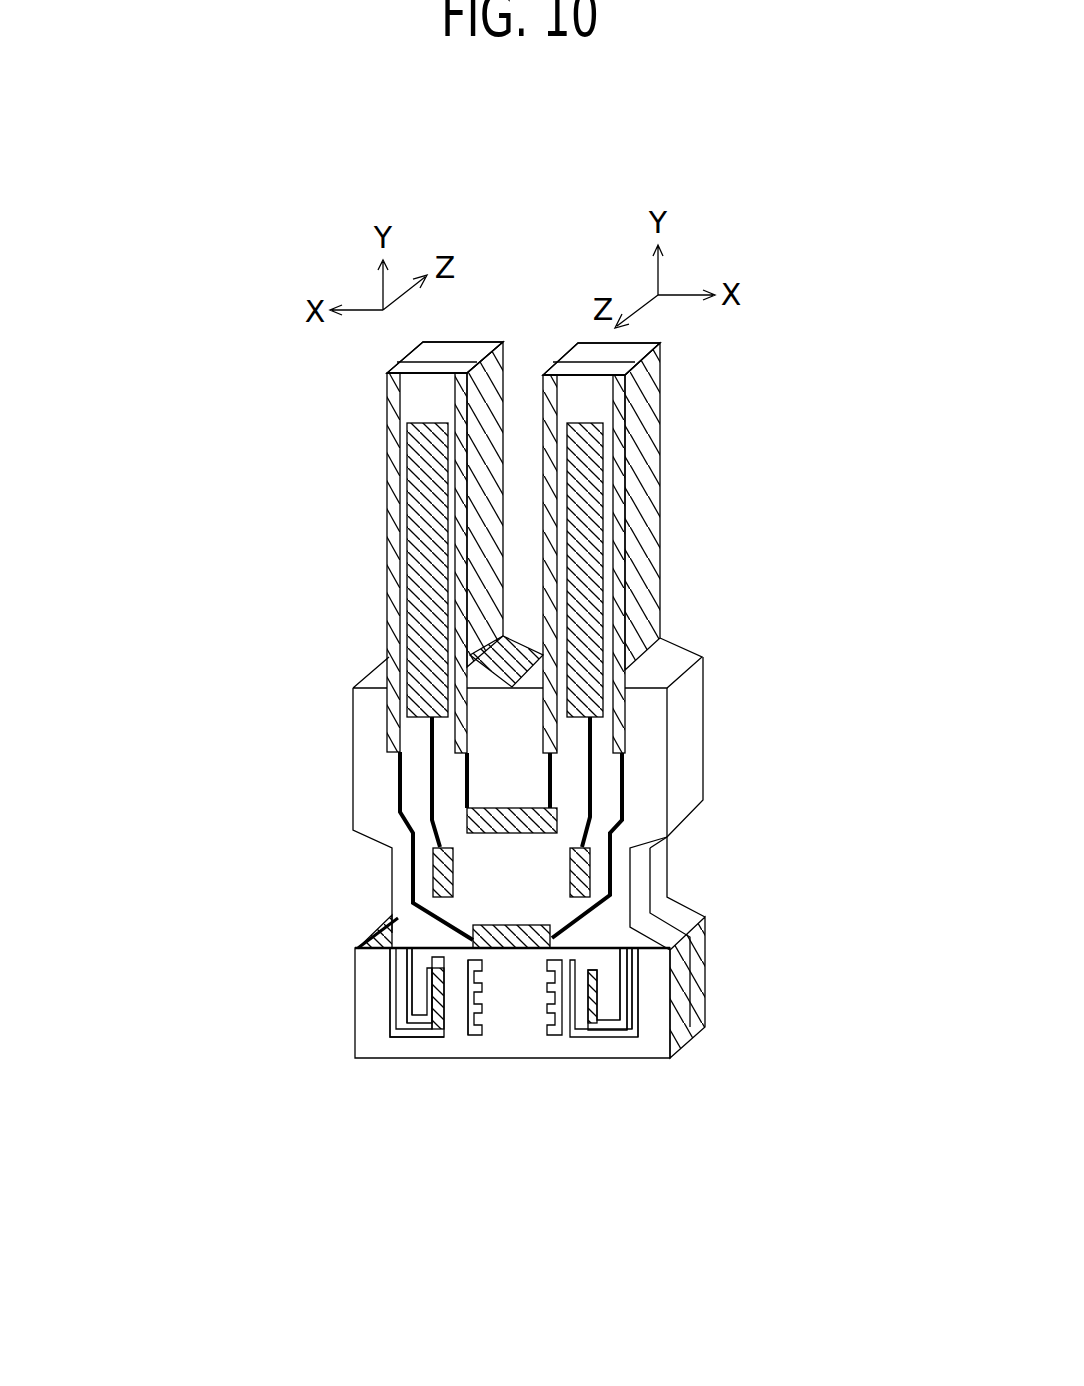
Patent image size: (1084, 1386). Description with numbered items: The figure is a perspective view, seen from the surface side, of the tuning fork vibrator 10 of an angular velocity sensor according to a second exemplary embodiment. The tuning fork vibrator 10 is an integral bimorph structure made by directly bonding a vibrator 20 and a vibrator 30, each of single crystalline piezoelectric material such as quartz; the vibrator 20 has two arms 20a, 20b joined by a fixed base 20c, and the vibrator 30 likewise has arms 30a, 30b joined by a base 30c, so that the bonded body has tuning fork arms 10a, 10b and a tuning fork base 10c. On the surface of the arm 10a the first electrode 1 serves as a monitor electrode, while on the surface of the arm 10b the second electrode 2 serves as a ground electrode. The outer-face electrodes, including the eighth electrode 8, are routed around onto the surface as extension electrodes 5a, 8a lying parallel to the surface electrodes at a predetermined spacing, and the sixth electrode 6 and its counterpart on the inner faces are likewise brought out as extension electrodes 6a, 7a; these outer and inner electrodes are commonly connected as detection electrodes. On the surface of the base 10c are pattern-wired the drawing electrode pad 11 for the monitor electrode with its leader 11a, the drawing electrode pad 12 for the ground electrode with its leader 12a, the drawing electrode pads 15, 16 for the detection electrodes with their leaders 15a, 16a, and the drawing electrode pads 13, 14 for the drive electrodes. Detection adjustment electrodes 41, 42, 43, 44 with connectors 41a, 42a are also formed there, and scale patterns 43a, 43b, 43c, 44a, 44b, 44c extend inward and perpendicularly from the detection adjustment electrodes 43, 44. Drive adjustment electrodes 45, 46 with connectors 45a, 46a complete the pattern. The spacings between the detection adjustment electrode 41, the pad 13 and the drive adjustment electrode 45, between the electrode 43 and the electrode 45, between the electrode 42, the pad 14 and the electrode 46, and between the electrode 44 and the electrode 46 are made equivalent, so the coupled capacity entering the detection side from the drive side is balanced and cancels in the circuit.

The tuning fork vibrator 10 is at (348, 668).
The tuning fork arm 10a is at (458, 330).
The tuning fork arm 10b is at (567, 330).
The tuning fork base 10c is at (357, 782).
The vibrator 20 is at (345, 728).
The arm 20a is at (448, 360).
The arm 20b is at (612, 372).
The base 20c is at (672, 735).
The vibrator 30 is at (703, 662).
The arm 30a is at (418, 352).
The arm 30b is at (628, 352).
The base 30c is at (693, 706).
The first electrode 1 is at (409, 455).
The second electrode 2 is at (592, 502).
The extension electrode 5a is at (392, 513).
The sixth electrode 6 is at (497, 383).
The extension electrode 6a is at (460, 526).
The extension electrode 7a is at (548, 565).
The eighth electrode 8 is at (638, 473).
The extension electrode 8a is at (620, 427).
The drawing electrode pad 11 is at (413, 902).
The leader 11a is at (466, 777).
The drawing electrode pad 12 is at (611, 890).
The lead wire 12a is at (590, 757).
The drawing electrode pad 13 is at (352, 1058).
The drawing electrode pad 14 is at (670, 1058).
The drawing electrode pad 15 is at (433, 877).
The leader 15a is at (432, 840).
The drawing electrode pad 16 is at (556, 950).
The leader 16a is at (400, 784).
The detection adjustment electrode 41 is at (384, 1000).
The connector 41a is at (392, 1000).
The detection adjustment electrode 42 is at (634, 1020).
The connector 42a is at (637, 978).
The detection adjustment electrode 43 is at (462, 1000).
The scale pattern 43a is at (445, 1000).
The scale pattern 43b is at (470, 1010).
The scale pattern 43c is at (440, 1000).
The detection adjustment electrode 44 is at (575, 1010).
The scale pattern 44a is at (707, 1030).
The scale pattern 44b is at (565, 1010).
The scale pattern 44c is at (552, 1015).
The drive adjustment electrode 45 is at (407, 1000).
The connector 45a is at (392, 1010).
The drive adjustment electrode 46 is at (600, 1020).
The connector 46a is at (640, 1020).